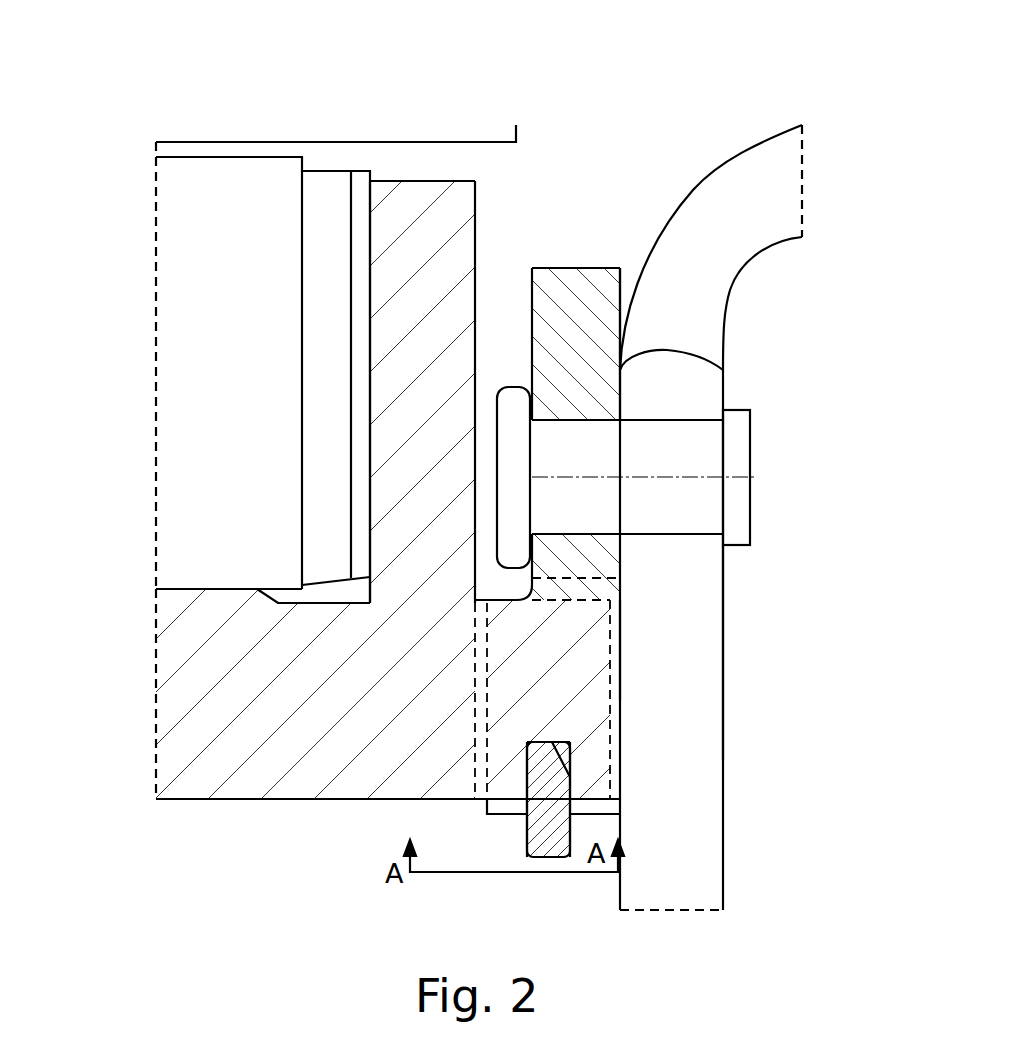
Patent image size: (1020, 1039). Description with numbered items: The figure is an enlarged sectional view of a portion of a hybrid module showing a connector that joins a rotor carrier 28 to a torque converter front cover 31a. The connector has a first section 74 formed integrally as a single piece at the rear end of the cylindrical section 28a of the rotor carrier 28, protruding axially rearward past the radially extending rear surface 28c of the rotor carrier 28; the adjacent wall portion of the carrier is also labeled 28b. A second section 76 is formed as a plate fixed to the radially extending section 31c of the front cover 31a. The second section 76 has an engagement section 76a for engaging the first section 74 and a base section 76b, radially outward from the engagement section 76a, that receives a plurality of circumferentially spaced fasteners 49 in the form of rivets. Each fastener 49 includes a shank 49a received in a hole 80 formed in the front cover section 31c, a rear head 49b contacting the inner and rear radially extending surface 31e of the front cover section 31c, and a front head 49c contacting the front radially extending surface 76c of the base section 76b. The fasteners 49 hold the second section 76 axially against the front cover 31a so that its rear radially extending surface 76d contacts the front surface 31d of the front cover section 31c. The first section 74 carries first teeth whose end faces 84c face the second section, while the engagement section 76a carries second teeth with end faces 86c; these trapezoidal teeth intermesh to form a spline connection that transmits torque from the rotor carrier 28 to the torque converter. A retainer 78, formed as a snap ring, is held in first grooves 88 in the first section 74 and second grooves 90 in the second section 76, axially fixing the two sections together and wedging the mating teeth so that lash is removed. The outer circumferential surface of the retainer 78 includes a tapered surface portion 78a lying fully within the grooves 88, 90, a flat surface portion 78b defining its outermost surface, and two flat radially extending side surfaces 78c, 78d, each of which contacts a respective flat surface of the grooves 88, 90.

The rotor carrier 28 is at (181, 810).
The cylindrical section 28a is at (175, 635).
The housing wall portion 28b is at (390, 497).
The radially extending rear surface 28c is at (473, 340).
The front cover 31a is at (733, 140).
The radially extending section 31c is at (693, 660).
The front and outer surface 31d is at (622, 363).
The inner and rear radially extending surface 31e is at (723, 598).
The fastener 49 is at (706, 476).
The shank 49a is at (698, 447).
The rear head 49b is at (740, 418).
The front head 49c is at (513, 417).
The first section 74 is at (565, 673).
The second section 76 is at (560, 292).
The engagement section 76a is at (572, 773).
The base section 76b is at (505, 312).
The front radially extending surface 76c is at (532, 292).
The rear radially extending surface 76d is at (620, 340).
The retainer 78 is at (602, 797).
The tapered surface portion 78a is at (570, 752).
The flat surface portion 78b is at (553, 737).
The flat radially extending side surface 78c is at (527, 762).
The flat radially extending side surface 78d is at (635, 797).
The hole 80 is at (673, 537).
The end face 84c is at (620, 613).
The end face 86c is at (527, 780).
The first groove 88 is at (523, 785).
The second groove 90 is at (600, 803).